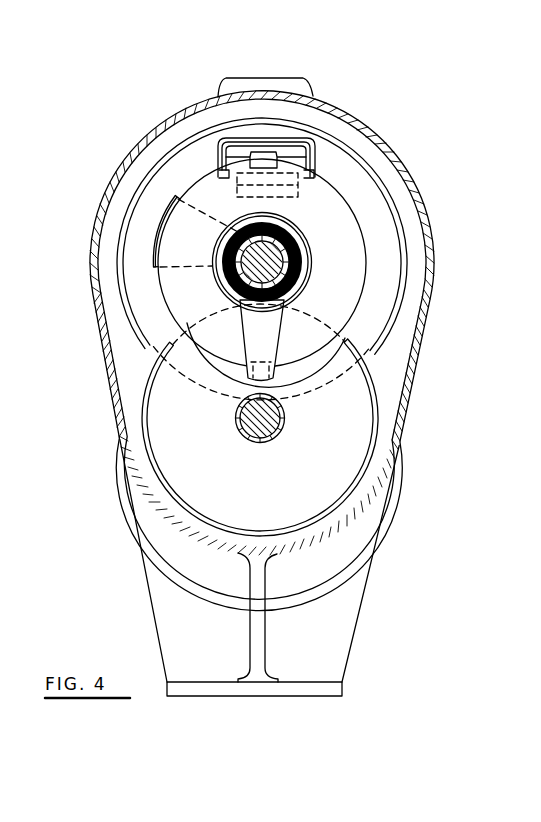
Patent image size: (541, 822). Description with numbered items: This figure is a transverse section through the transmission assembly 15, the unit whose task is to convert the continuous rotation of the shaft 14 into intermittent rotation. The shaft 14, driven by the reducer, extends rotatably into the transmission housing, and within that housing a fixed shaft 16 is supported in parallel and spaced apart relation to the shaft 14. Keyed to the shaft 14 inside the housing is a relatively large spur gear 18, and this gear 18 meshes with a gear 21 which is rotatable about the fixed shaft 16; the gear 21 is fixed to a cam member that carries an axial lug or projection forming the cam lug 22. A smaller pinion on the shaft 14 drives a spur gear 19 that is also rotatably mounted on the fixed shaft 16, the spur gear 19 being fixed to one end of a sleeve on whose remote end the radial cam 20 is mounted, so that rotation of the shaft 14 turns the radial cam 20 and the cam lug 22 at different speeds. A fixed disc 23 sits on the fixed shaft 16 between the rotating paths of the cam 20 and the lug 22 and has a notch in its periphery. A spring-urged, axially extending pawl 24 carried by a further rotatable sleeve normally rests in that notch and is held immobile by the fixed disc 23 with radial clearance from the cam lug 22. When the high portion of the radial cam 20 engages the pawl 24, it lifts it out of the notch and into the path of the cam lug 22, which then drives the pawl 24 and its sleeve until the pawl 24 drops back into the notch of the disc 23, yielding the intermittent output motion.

The shaft 14 is at (270, 433).
The transmission assembly 15 is at (93, 296).
The fixed shaft 16 is at (303, 281).
The spur gear 18 is at (330, 446).
The spur gear 19 is at (380, 268).
The radial cam 20 is at (165, 213).
The gear 21 is at (305, 240).
The cam lug 22 is at (252, 346).
The fixed disc 23 is at (325, 200).
The pawl 24 is at (265, 155).